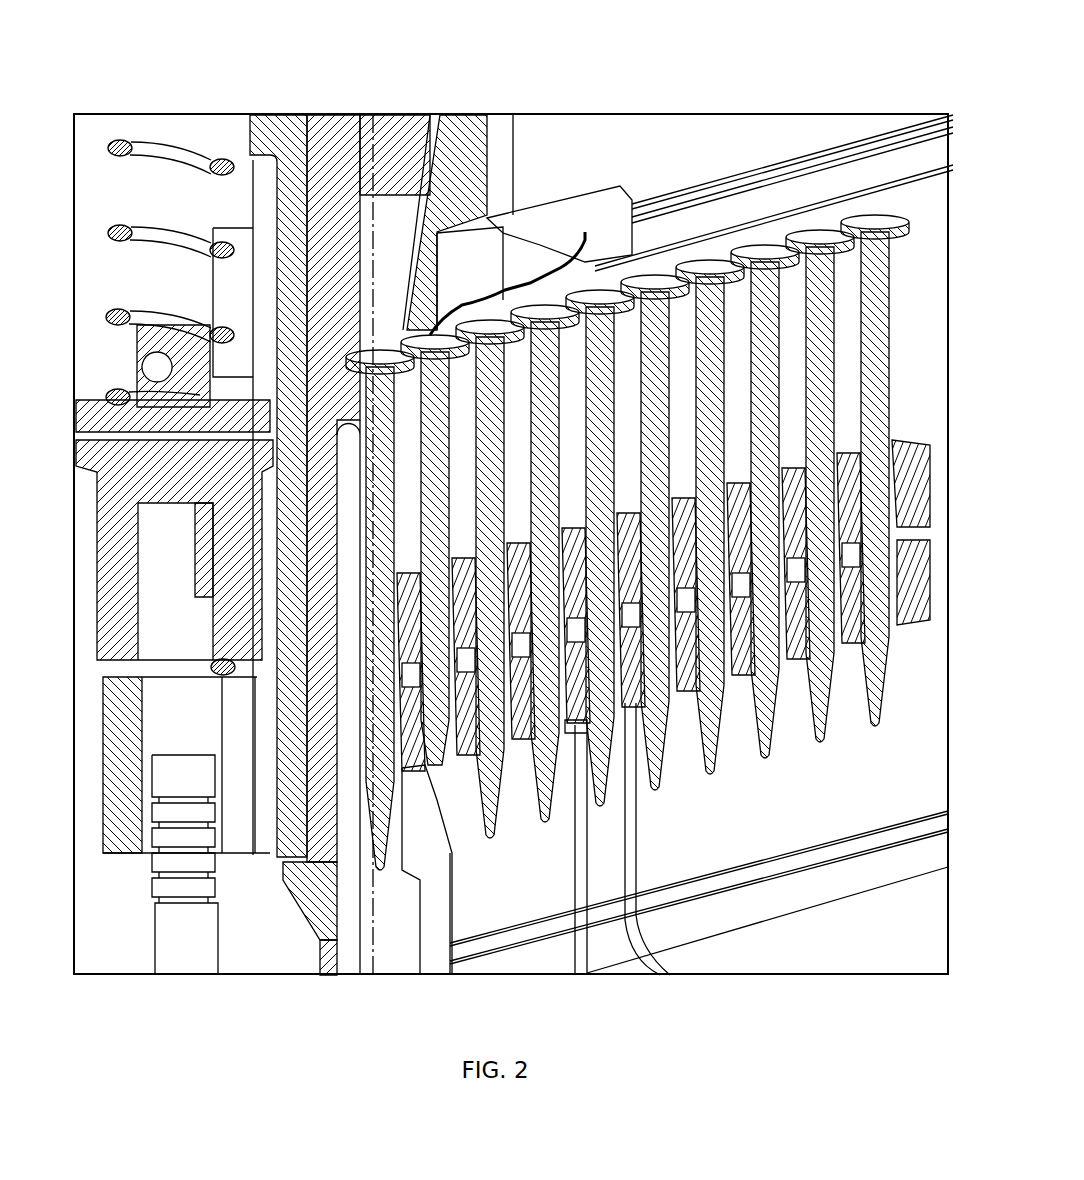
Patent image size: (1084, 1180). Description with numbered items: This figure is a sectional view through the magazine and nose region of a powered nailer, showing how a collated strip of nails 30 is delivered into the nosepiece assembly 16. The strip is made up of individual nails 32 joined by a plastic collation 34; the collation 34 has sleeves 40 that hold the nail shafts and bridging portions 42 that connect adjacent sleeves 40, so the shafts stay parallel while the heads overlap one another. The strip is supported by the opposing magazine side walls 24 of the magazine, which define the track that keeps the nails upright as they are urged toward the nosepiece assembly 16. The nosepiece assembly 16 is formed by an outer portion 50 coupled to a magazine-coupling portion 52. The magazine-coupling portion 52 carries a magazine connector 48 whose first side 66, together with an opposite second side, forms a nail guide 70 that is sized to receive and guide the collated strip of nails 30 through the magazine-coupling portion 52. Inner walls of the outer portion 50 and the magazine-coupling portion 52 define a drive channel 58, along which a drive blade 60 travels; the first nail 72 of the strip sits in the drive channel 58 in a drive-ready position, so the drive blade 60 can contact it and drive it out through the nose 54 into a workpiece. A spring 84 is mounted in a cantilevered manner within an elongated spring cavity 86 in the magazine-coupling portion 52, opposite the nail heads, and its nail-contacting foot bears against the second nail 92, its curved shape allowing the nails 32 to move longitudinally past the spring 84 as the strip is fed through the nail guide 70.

The nosepiece assembly 16 is at (98, 80).
The magazine side walls 24 is at (817, 833).
The collated strip of nails 30 is at (895, 288).
The nails 32 is at (893, 657).
The collation 34 is at (904, 440).
The sleeves 40 is at (838, 440).
The bridging portions 42 is at (807, 690).
The magazine connector 48 is at (630, 200).
The outer portion 50 is at (322, 115).
The magazine-coupling portion 52 is at (478, 120).
The nose 54 is at (325, 975).
The drive channel 58 is at (398, 958).
The drive blade 60 is at (360, 115).
The first side 66 is at (545, 290).
The nail guide 70 is at (608, 268).
The first nail 72 is at (367, 403).
The spring 84 is at (440, 330).
The spring cavity 86 is at (467, 253).
The second nail 92 is at (430, 410).